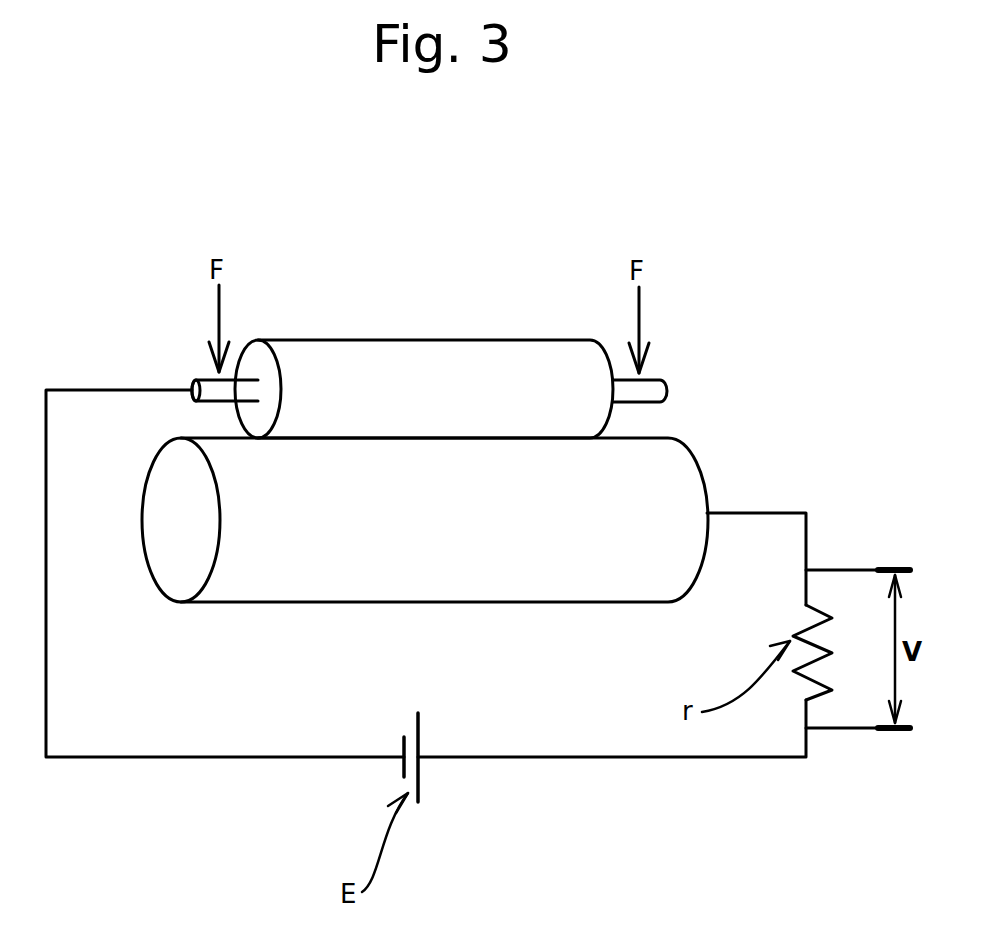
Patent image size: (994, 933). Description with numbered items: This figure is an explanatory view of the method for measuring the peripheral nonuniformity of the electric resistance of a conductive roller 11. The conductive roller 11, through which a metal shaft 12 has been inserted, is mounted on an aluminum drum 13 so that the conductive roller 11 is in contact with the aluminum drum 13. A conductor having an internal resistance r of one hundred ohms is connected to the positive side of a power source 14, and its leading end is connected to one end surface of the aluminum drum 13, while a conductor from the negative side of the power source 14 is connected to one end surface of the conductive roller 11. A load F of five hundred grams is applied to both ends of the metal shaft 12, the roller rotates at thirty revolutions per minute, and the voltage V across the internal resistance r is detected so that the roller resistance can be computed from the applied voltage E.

The conductive roller 11 is at (410, 378).
The metal shaft 12 is at (210, 385).
The aluminum drum 13 is at (665, 498).
The power source 14 is at (425, 740).